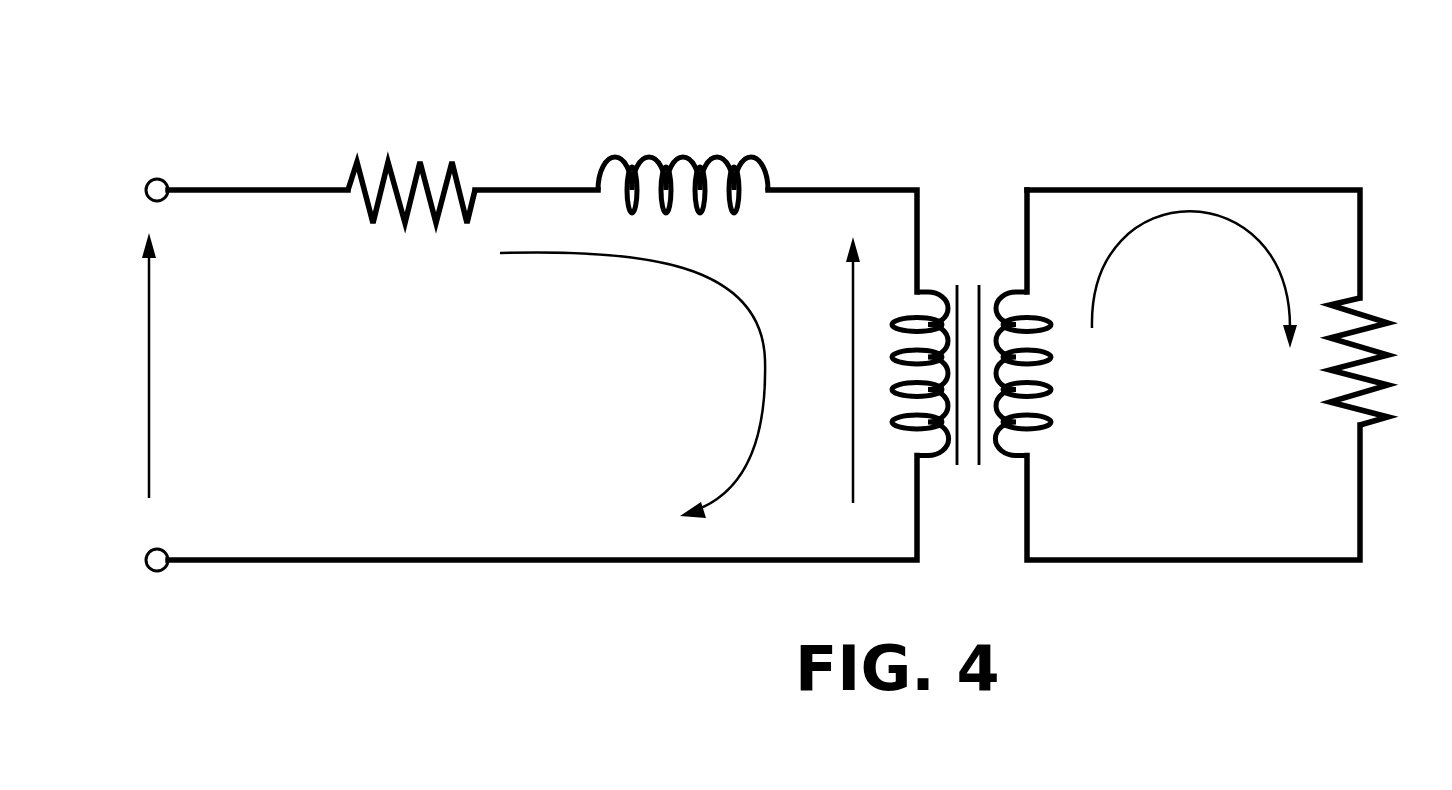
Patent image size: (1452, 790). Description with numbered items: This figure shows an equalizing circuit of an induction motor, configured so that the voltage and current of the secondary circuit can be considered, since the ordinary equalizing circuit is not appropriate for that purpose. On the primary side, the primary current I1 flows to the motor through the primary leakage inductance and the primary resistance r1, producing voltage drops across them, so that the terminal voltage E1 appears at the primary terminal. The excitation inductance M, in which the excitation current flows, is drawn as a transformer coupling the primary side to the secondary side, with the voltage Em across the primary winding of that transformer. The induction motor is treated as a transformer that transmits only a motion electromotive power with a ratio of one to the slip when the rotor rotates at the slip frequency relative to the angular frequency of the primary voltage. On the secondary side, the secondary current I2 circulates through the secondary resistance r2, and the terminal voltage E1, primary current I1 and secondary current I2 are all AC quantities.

The primary resistance r1 is at (411, 175).
The excitation inductance M is at (1031, 375).
The terminal voltage E1 is at (116, 365).
The primary current I1 is at (632, 385).
The magnetizing voltage Em is at (828, 370).
The secondary current I2 is at (1194, 279).
The secondary load resistance r2 is at (1383, 361).